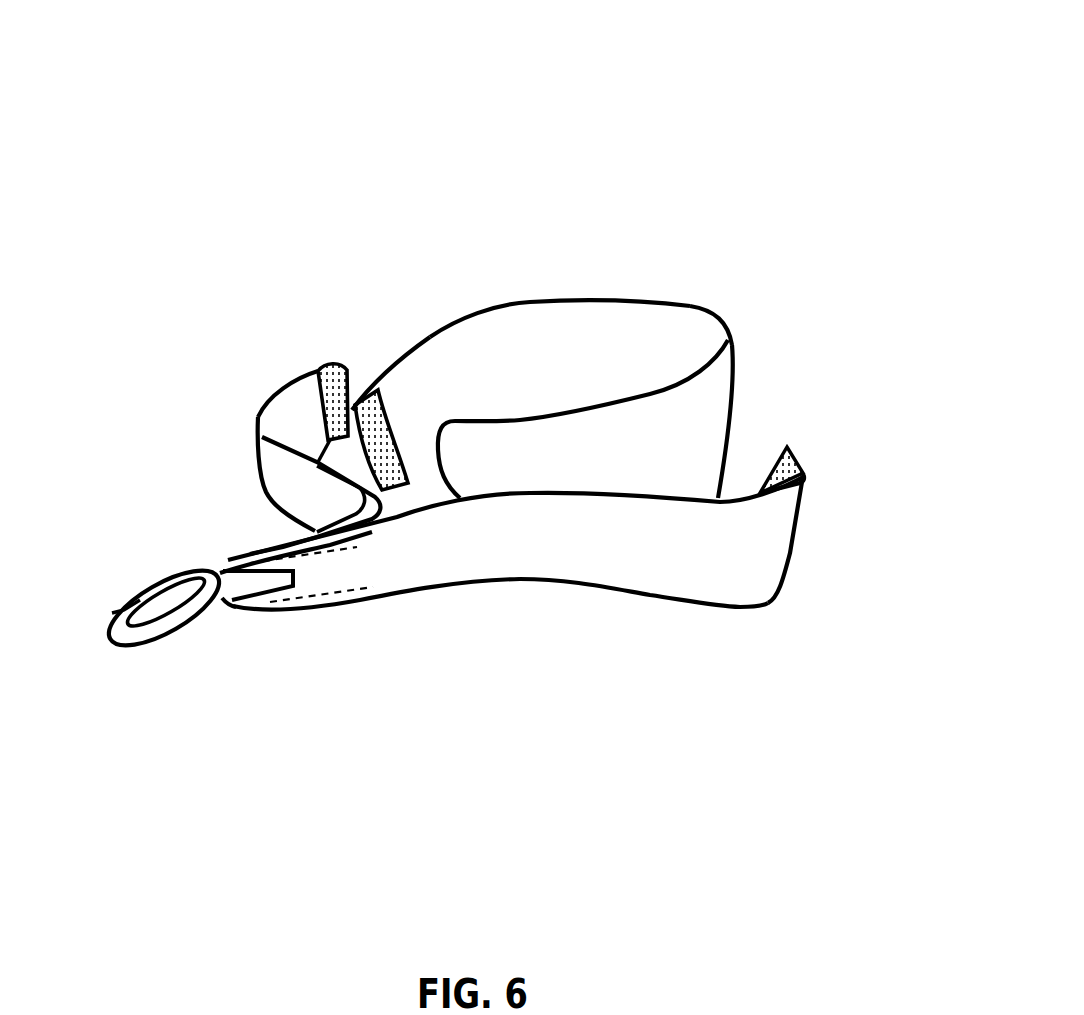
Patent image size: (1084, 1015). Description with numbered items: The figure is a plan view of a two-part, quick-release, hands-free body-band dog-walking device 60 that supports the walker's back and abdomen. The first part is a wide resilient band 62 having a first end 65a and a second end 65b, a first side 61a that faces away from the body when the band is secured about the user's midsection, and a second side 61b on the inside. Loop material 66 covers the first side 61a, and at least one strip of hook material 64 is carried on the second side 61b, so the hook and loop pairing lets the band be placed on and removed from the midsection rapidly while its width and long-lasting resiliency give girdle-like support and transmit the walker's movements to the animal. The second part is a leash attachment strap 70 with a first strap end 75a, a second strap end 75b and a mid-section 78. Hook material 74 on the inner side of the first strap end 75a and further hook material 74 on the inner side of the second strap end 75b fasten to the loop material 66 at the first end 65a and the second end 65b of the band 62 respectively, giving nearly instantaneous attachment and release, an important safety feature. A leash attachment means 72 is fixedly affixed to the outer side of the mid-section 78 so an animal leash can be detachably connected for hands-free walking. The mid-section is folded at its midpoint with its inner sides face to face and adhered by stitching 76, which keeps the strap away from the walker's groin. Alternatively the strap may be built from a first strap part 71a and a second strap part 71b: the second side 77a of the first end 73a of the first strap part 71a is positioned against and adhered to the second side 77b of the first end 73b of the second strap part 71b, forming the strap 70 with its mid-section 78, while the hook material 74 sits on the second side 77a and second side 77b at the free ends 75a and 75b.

The body-band dog-walking device 60 is at (510, 78).
The first side 61a is at (723, 392).
The second side 61b is at (623, 317).
The resilient band 62 is at (705, 298).
The hook material 64 is at (370, 395).
The first end 65a is at (438, 336).
The second end 65b is at (522, 445).
The loop material 66 is at (727, 367).
The leash attachment strap 70 is at (530, 604).
The first strap part 71a is at (259, 464).
The second strap part 71b is at (692, 606).
The leash attachment means 72 is at (122, 650).
The first end of first strap part 73a is at (237, 566).
The first end of second strap part 73b is at (360, 602).
The hook material 74 is at (333, 368).
The first strap end 75a is at (313, 370).
The second strap end 75b is at (788, 522).
The stitching 76 is at (293, 600).
The second side of first strap part 77a is at (272, 414).
The second side of second strap part 77b is at (796, 479).
The mid-section 78 is at (233, 604).